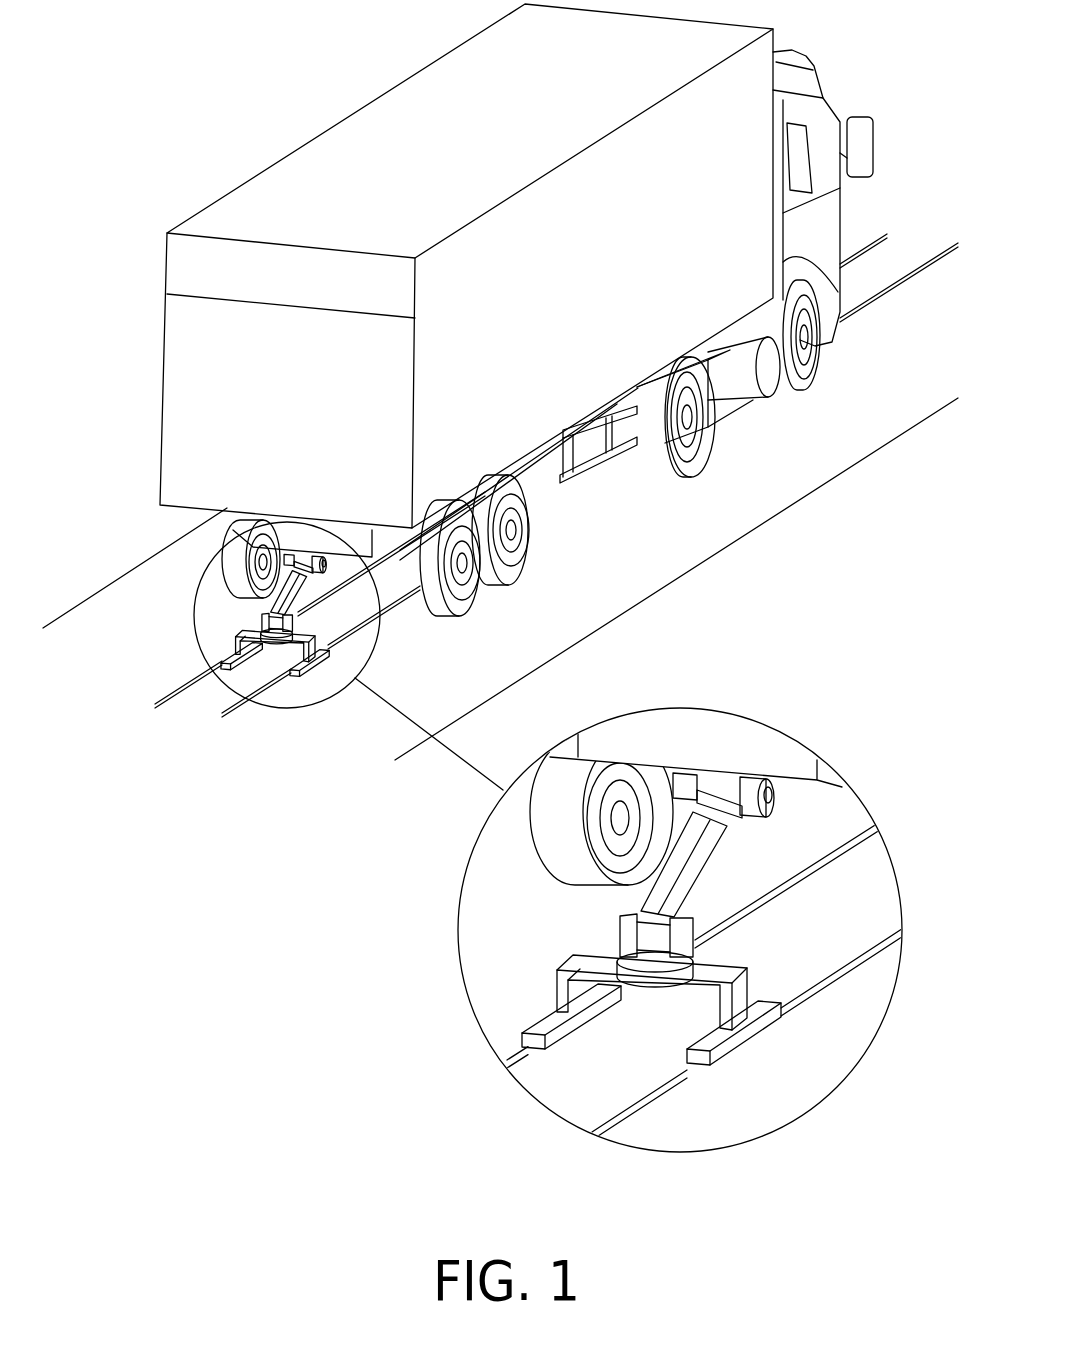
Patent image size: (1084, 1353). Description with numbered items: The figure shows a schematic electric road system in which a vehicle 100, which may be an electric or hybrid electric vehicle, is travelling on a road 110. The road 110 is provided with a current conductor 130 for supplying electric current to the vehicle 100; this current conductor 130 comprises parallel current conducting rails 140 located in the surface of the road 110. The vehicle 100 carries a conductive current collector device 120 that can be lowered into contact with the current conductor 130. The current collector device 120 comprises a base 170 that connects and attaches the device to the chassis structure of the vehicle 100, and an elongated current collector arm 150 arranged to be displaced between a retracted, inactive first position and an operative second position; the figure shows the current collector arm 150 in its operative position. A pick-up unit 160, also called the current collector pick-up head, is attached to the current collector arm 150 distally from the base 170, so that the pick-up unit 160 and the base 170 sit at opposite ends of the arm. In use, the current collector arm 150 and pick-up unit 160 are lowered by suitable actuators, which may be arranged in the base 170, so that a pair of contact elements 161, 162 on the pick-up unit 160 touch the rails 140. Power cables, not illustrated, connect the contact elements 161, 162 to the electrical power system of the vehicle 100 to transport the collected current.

The vehicle 100 is at (300, 52).
The road 110 is at (713, 510).
The current collector device 120 is at (230, 632).
The current conductor 130 is at (242, 717).
The current conducting rails 140 is at (597, 1126).
The current collector arm 150 is at (682, 870).
The pick-up unit 160 is at (322, 665).
The contact element 161 is at (540, 1015).
The contact element 162 is at (717, 1037).
The base 170 is at (330, 577).